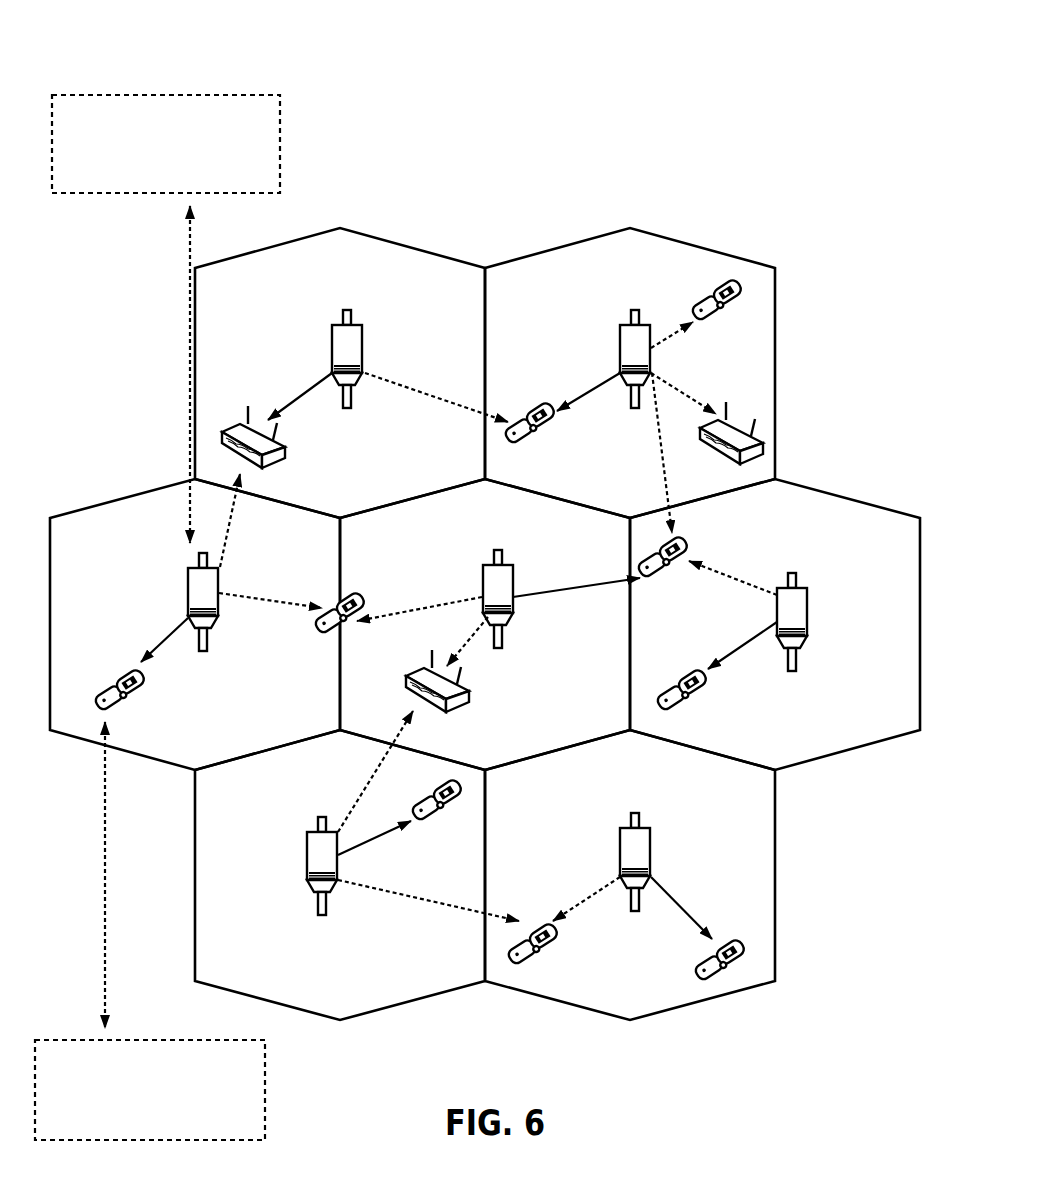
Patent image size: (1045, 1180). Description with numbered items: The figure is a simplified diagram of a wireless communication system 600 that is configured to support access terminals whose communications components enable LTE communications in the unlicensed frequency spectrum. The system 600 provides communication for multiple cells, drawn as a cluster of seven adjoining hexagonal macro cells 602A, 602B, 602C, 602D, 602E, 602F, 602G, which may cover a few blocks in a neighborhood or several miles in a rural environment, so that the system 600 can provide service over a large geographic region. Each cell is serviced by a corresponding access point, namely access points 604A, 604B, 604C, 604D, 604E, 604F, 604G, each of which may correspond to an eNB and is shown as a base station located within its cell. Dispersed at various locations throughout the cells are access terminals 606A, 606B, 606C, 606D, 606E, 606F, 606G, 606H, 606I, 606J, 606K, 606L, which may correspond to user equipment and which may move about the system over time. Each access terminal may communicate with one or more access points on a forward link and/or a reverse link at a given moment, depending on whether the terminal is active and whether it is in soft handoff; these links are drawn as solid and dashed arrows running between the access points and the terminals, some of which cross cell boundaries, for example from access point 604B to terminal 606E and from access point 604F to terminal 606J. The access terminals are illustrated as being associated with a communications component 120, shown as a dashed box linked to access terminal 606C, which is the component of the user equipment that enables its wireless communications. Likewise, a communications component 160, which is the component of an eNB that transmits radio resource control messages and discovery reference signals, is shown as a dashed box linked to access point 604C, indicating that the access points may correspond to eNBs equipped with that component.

The wireless communication system 600 is at (470, 60).
The communications component 160 is at (166, 144).
The communications component 120 is at (150, 1090).
The macro cell 602A is at (283, 243).
The macro cell 602B is at (632, 230).
The macro cell 602C is at (130, 497).
The macro cell 602D is at (485, 624).
The macro cell 602E is at (855, 498).
The macro cell 602F is at (196, 944).
The macro cell 602G is at (777, 825).
The access point 604A is at (345, 308).
The access point 604B is at (633, 308).
The access point 604C is at (203, 555).
The access point 604D is at (490, 560).
The access point 604E is at (793, 573).
The access point 604F is at (320, 816).
The access point 604G is at (633, 813).
The access terminal 606A is at (280, 467).
The access terminal 606B is at (543, 436).
The access terminal 606C is at (126, 714).
The access terminal 606D is at (337, 603).
The access terminal 606E is at (659, 579).
The access terminal 606F is at (442, 824).
The access terminal 606G is at (548, 948).
The access terminal 606H is at (744, 420).
The access terminal 606I is at (708, 298).
The access terminal 606J is at (461, 710).
The access terminal 606K is at (688, 715).
The access terminal 606L is at (731, 933).